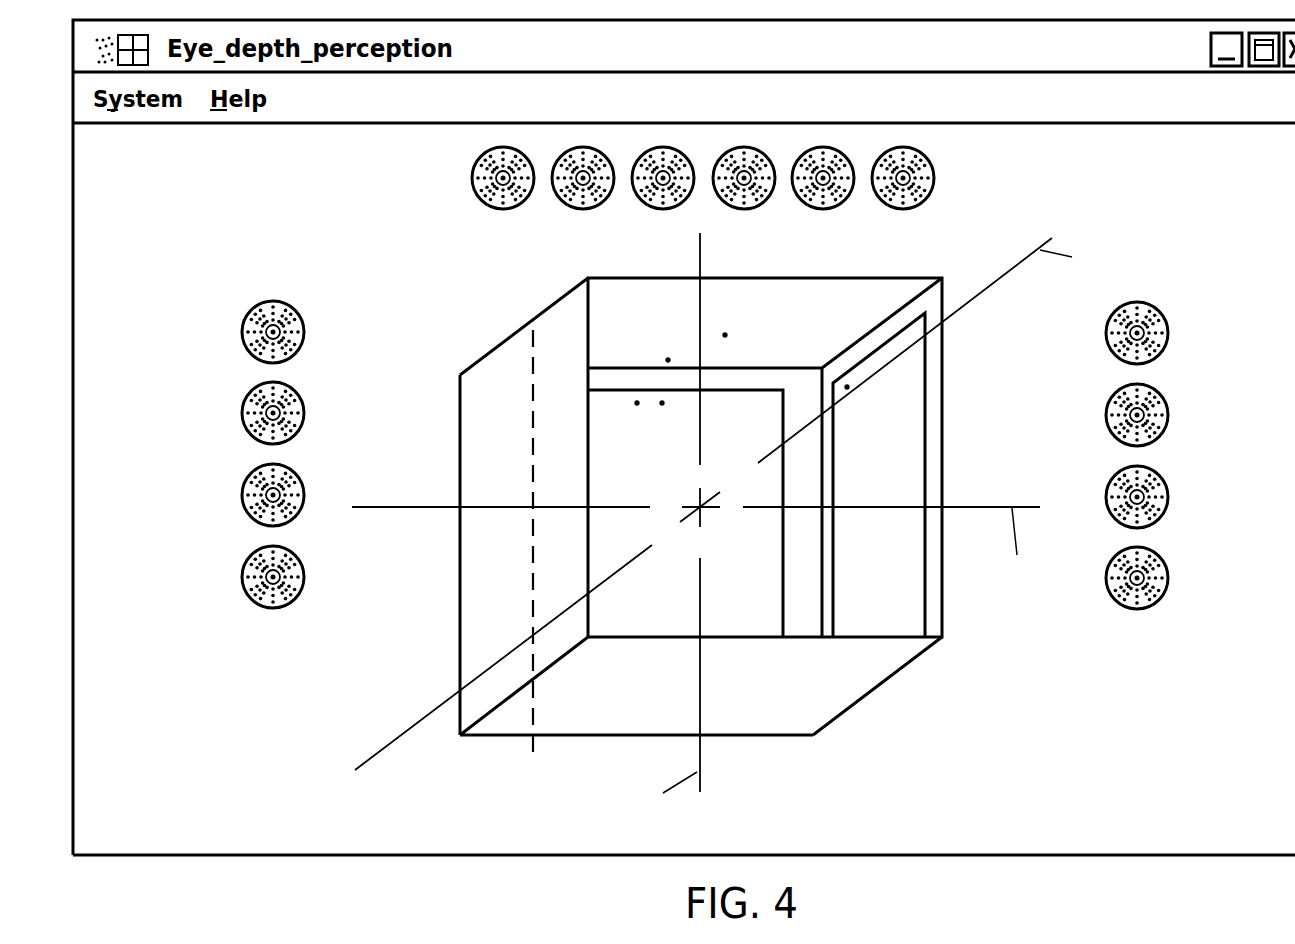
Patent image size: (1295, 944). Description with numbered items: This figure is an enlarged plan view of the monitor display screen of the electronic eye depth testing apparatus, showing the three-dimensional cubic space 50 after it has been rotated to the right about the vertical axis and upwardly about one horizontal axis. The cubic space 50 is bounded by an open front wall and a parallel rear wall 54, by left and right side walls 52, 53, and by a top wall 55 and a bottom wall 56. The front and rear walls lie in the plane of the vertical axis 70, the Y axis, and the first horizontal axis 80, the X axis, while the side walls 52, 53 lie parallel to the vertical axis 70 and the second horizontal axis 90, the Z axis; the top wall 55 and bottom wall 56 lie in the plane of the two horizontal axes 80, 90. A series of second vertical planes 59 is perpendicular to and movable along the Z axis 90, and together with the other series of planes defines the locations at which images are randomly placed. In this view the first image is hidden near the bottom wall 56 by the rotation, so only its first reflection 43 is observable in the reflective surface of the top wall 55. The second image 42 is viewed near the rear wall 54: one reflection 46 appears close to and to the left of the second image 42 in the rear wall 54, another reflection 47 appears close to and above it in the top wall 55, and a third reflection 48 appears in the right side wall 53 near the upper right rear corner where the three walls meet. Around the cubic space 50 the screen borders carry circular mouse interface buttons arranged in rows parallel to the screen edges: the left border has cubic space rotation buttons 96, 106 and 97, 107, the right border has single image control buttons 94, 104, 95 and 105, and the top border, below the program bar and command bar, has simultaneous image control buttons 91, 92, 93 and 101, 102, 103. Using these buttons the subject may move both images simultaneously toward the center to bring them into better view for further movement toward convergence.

The second image 42 is at (662, 403).
The first reflection 43 is at (725, 335).
The reflection 46 is at (637, 403).
The reflection 47 is at (668, 360).
The third reflection 48 is at (847, 387).
The cubic space 50 is at (498, 408).
The side wall 52 is at (588, 495).
The side wall 53 is at (893, 472).
The rear wall 54 is at (666, 472).
The top wall 55 is at (788, 337).
The bottom wall 56 is at (733, 637).
The second vertical plane 59 is at (528, 760).
The vertical axis 70 is at (700, 792).
The first horizontal axis 80 is at (1040, 508).
The second horizontal axis 90 is at (1052, 238).
The simultaneous image control button 91 is at (655, 200).
The simultaneous image control button 92 is at (835, 200).
The simultaneous image control button 93 is at (497, 200).
The single image control button 94 is at (1150, 340).
The single image control button 95 is at (1150, 508).
The cubic space rotation button 96 is at (258, 318).
The cubic space rotation button 97 is at (258, 482).
The simultaneous image control button 101 is at (762, 200).
The simultaneous image control button 102 is at (920, 165).
The simultaneous image control button 103 is at (575, 200).
The single image control button 104 is at (1150, 425).
The single image control button 105 is at (1150, 590).
The cubic space rotation button 106 is at (258, 400).
The cubic space rotation button 107 is at (258, 565).